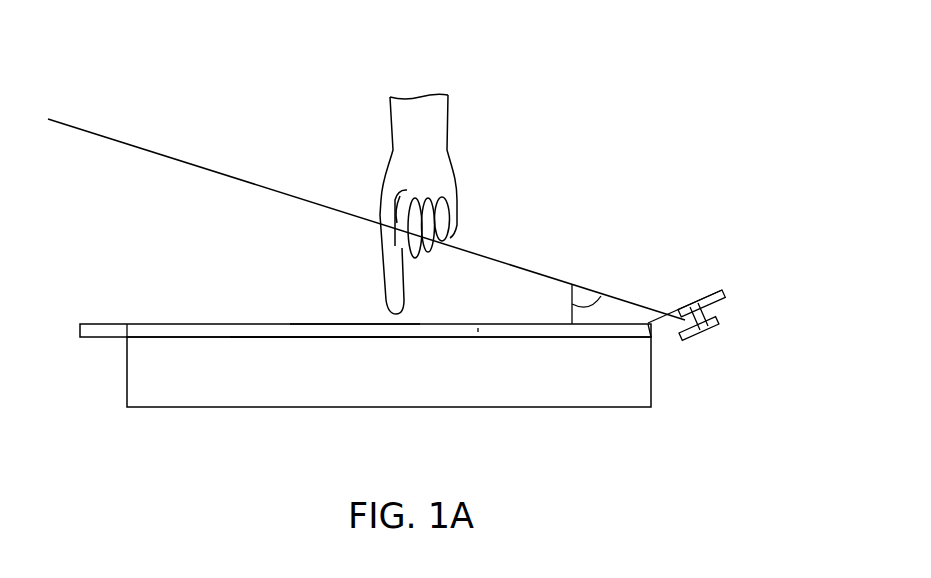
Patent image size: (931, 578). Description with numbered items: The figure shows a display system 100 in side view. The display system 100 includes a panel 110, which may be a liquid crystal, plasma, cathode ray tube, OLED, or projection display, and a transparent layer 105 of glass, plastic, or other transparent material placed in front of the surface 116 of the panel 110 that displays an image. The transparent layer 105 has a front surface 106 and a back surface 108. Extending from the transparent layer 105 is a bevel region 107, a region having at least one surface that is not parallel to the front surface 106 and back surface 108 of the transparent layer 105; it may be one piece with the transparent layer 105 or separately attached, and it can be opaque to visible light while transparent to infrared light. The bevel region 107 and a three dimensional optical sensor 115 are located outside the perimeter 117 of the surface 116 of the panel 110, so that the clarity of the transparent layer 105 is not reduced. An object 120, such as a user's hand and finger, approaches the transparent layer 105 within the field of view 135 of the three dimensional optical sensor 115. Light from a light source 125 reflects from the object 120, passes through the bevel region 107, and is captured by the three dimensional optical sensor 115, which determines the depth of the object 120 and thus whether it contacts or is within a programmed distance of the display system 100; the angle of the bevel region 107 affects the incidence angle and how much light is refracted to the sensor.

The display system 100 is at (690, 62).
The transparent layer 105 is at (478, 332).
The front surface 106 is at (187, 324).
The bevel region 107 is at (708, 297).
The back surface 108 is at (242, 337).
The panel 110 is at (572, 407).
The three dimensional optical sensor 115 is at (717, 322).
The surface 116 is at (303, 337).
The perimeter 117 is at (122, 323).
The object 120 is at (407, 293).
The light source 125 is at (692, 338).
The field of view 135 is at (608, 292).